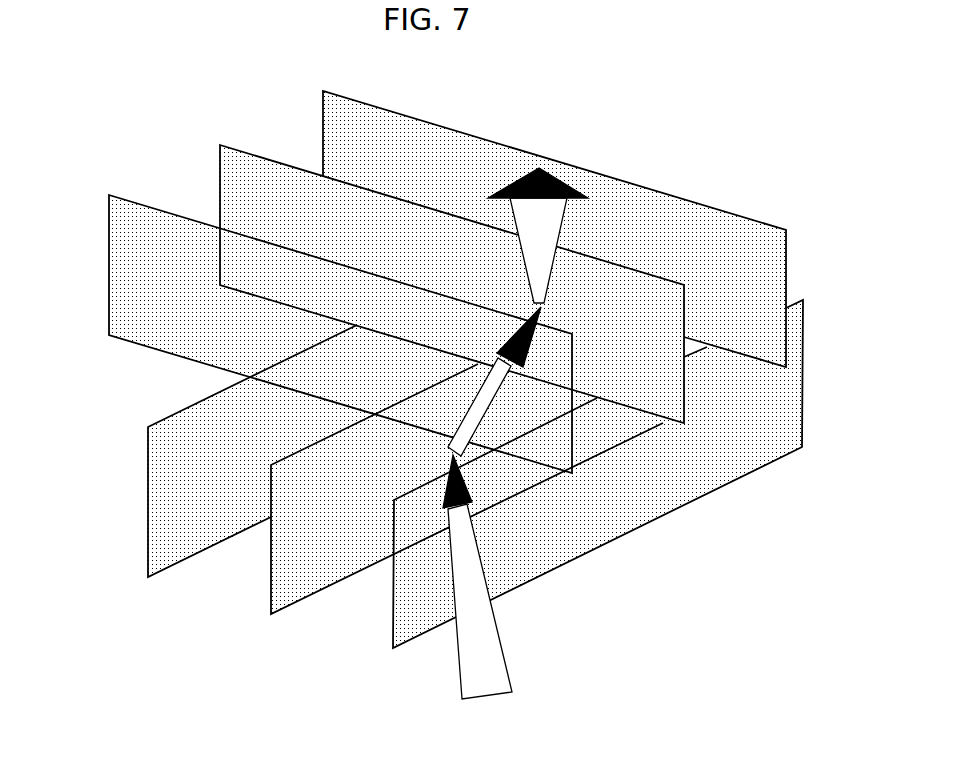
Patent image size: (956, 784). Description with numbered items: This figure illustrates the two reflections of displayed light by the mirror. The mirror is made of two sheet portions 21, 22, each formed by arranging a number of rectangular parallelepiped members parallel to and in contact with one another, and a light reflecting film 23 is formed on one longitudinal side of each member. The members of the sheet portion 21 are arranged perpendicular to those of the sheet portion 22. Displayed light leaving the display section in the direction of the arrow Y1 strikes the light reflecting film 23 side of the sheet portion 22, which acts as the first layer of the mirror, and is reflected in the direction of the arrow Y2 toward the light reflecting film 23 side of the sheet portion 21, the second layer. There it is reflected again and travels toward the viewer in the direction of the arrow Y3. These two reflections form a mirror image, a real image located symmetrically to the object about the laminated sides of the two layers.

The sheet portion 21 is at (748, 205).
The sheet portion 22 is at (731, 500).
The light reflecting film 23 is at (118, 223).
The arrow Y1 is at (500, 643).
The arrow Y2 is at (462, 452).
The arrow Y3 is at (540, 223).